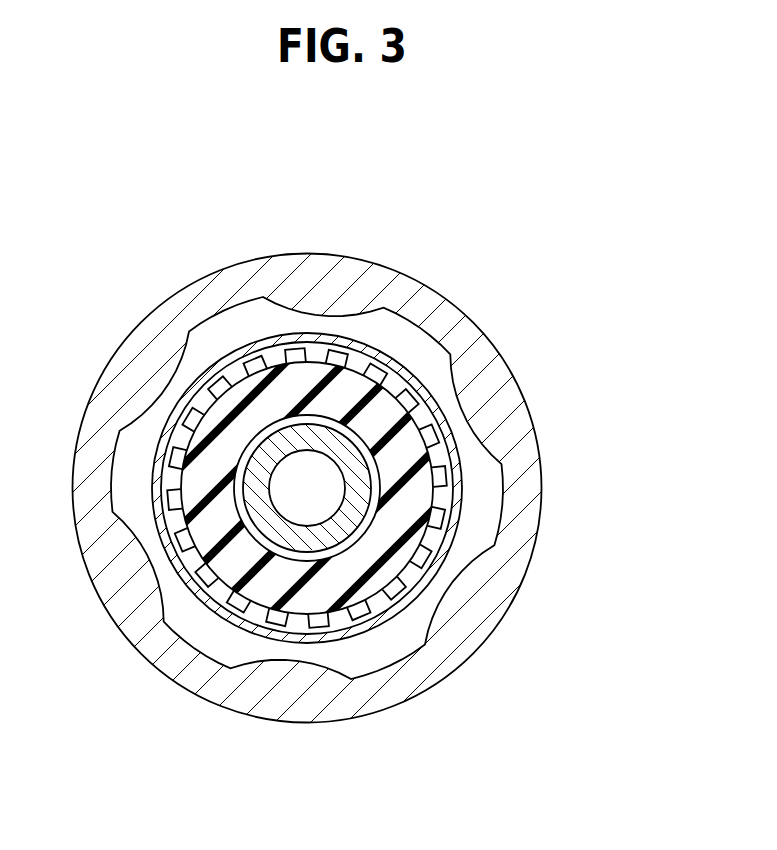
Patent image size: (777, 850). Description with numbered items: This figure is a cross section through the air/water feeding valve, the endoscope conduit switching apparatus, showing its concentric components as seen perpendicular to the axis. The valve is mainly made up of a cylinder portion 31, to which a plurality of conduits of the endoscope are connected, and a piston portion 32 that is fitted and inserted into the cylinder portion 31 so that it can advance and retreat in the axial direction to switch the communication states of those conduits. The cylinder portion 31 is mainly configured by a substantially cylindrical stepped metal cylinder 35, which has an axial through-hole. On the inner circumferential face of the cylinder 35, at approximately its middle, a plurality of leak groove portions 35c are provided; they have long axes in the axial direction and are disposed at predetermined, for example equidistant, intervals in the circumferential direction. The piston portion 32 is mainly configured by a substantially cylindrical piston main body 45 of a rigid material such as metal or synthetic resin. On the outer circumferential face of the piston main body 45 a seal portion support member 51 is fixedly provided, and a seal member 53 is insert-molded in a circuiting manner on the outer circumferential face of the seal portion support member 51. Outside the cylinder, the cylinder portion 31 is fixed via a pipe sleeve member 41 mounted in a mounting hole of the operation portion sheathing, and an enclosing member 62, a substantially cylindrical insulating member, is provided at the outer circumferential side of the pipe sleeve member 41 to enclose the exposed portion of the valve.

The cylinder portion 31 is at (648, 579).
The piston portion 32 is at (278, 167).
The cylinder 35 is at (435, 543).
The leak groove portions 35c is at (446, 600).
The pipe sleeve member 41 is at (458, 491).
The piston main body 45 is at (322, 438).
The seal portion support member 51 is at (386, 400).
The seal member 53 is at (499, 366).
The enclosing member 62 is at (518, 425).